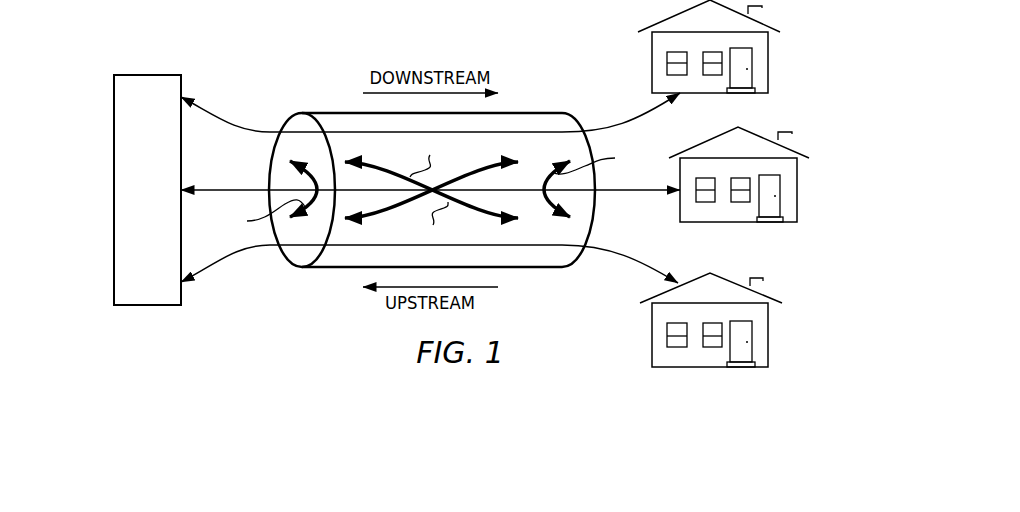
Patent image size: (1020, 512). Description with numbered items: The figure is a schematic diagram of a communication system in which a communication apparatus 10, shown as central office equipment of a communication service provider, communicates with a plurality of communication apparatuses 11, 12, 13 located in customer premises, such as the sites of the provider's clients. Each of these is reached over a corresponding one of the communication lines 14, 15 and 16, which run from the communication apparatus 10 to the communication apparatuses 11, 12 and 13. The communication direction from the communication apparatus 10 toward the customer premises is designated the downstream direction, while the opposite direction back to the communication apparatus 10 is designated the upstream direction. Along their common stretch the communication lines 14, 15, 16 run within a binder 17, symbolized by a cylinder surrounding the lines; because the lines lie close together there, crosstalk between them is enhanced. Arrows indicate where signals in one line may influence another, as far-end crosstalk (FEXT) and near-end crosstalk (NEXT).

The communication apparatus 10 is at (114, 191).
The communication apparatus 11 is at (768, 62).
The communication apparatus 12 is at (797, 190).
The communication apparatus 13 is at (768, 337).
The communication line 14 is at (228, 123).
The communication line 15 is at (223, 189).
The communication line 16 is at (230, 259).
The binder 17 is at (594, 216).